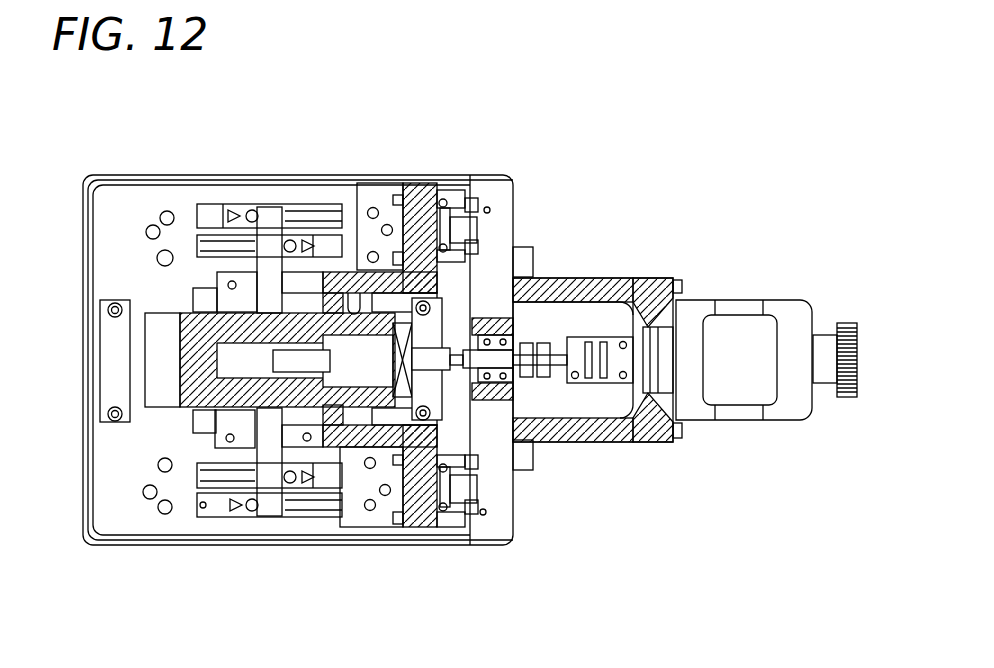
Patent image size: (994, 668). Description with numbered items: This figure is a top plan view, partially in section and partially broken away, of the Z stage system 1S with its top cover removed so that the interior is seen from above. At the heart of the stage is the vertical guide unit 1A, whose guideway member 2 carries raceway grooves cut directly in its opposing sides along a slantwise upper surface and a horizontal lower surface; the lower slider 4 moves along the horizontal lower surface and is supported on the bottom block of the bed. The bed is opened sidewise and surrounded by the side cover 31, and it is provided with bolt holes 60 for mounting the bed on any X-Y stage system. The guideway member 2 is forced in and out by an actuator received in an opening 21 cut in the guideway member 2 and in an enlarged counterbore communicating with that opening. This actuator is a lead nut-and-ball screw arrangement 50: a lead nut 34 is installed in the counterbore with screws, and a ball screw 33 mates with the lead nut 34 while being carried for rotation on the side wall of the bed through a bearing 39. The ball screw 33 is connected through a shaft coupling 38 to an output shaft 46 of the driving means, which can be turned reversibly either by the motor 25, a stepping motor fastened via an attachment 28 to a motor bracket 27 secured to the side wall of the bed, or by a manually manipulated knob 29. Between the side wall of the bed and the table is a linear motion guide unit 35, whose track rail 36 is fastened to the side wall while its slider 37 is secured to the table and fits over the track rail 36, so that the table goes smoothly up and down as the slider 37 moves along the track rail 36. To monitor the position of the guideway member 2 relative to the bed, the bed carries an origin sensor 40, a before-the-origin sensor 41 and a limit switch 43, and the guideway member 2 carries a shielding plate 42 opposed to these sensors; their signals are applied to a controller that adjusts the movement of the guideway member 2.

The vertical guide unit 1A is at (194, 286).
The stage system 1S is at (578, 212).
The guideway member 2 is at (190, 332).
The lower slider 4 is at (227, 430).
The opening 21 is at (362, 345).
The motor 25 is at (742, 333).
The motor bracket 27 is at (608, 440).
The attachment 28 is at (670, 440).
The knob 29 is at (848, 325).
The side cover 31 is at (85, 372).
The ball screw 33 is at (510, 360).
The lead nut 34 is at (443, 356).
The linear motion guide unit 35 is at (468, 208).
The track rail 36 is at (478, 219).
The slider 37 is at (455, 195).
The shaft coupling 38 is at (583, 343).
The bearing 39 is at (548, 443).
The origin sensor 40 is at (330, 478).
The before-the-origin sensor 41 is at (313, 507).
The shielding plate 42 is at (270, 222).
The limit switch 43 is at (212, 212).
The output shaft 46 is at (668, 356).
The lead nut-and-ball screw arrangement 50 is at (459, 377).
The bolt holes 60 is at (160, 255).